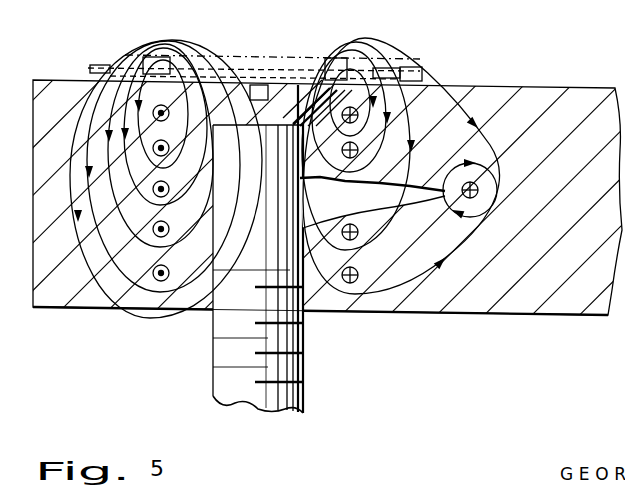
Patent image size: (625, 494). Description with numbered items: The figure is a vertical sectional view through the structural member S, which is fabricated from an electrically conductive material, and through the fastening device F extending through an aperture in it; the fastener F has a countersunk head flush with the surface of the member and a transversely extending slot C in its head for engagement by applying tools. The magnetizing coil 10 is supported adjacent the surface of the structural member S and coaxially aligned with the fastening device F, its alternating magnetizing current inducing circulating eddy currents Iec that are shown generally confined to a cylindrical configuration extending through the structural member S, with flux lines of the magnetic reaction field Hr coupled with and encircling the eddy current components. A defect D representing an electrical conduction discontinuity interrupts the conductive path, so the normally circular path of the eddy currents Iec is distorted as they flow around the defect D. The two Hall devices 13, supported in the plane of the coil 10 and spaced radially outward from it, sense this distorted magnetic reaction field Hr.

The coil 10 is at (236, 56).
The Hall devices 13 is at (90, 68).
The slot C is at (259, 88).
The structural member S is at (560, 83).
The magnetic reaction field Hr is at (411, 32).
The eddy currents Iec is at (509, 167).
The defect D is at (413, 203).
The fastening device F is at (303, 355).